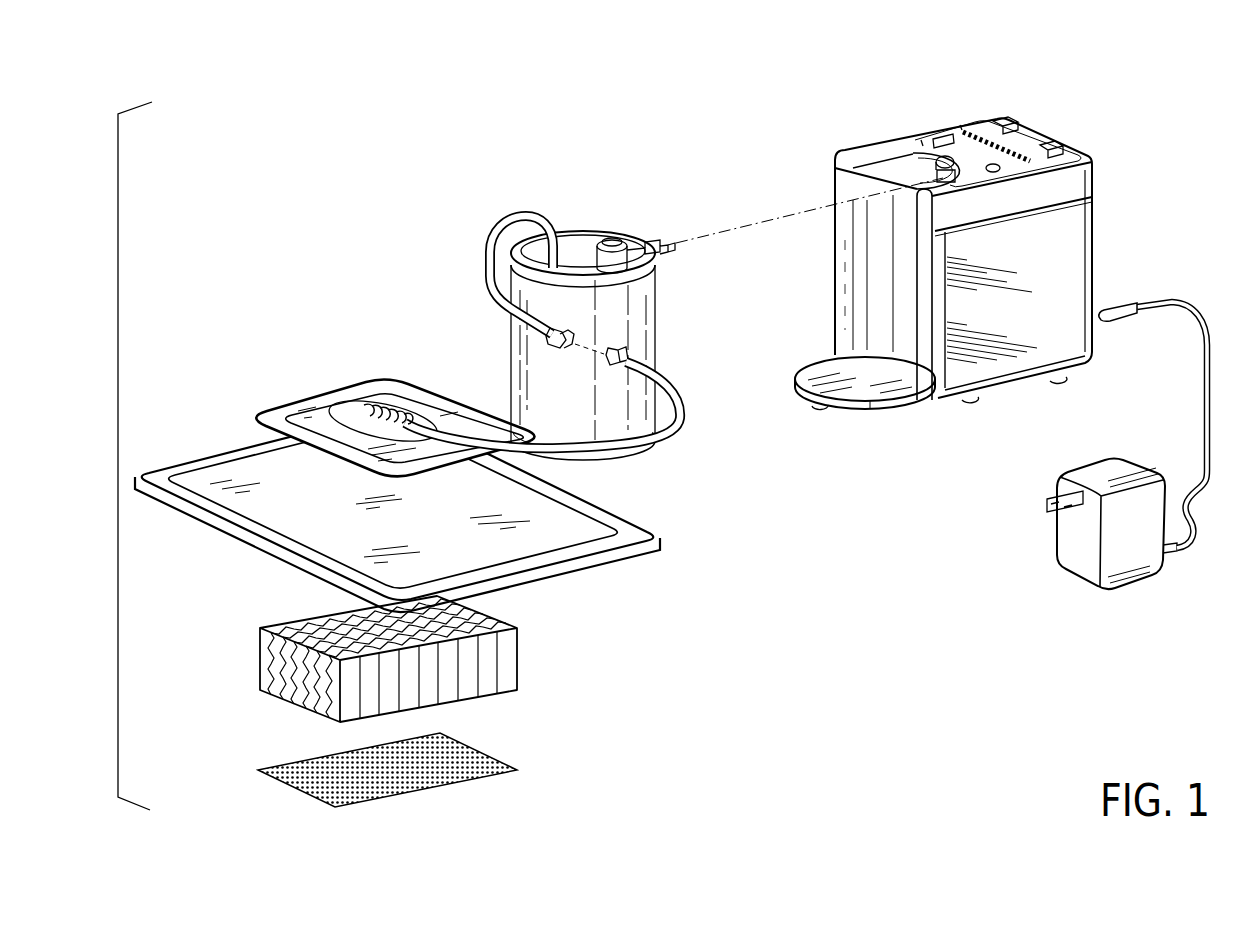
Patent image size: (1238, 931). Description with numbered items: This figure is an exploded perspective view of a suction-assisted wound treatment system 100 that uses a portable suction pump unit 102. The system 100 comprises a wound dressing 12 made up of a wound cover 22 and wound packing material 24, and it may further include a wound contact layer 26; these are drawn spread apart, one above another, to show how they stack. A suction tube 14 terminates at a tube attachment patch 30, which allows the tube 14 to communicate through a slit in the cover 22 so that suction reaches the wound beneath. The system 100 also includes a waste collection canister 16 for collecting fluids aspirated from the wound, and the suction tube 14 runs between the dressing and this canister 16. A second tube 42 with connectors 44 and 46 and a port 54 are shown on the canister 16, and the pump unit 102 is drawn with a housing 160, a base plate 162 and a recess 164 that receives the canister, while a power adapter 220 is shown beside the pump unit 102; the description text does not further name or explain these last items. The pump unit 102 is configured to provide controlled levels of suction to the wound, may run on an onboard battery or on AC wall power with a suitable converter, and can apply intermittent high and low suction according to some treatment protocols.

The wound dressing 12 is at (105, 226).
The suction-assisted wound treatment system 100 is at (435, 181).
The portable suction pump unit 102 is at (934, 116).
The suction tube 14 is at (668, 420).
The waste collection canister 16 is at (636, 314).
The wound cover 22 is at (622, 524).
The wound packing material 24 is at (506, 654).
The wound contact layer 26 is at (502, 761).
The tube attachment patch 30 is at (309, 412).
The tube 42 is at (521, 226).
The connector 44 is at (546, 342).
The connector 46 is at (625, 356).
The port 54 is at (664, 241).
The housing 160 is at (880, 275).
The base plate 162 is at (818, 363).
The canister holder recess 164 is at (940, 181).
The power adapter 220 is at (1126, 586).